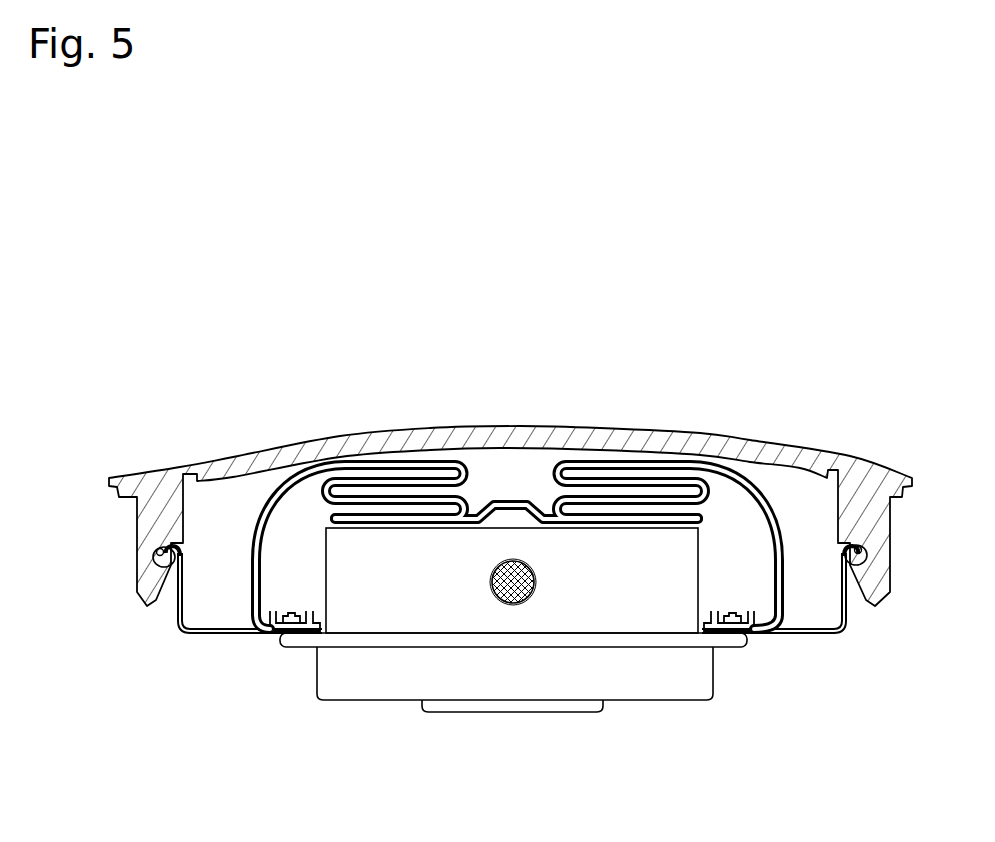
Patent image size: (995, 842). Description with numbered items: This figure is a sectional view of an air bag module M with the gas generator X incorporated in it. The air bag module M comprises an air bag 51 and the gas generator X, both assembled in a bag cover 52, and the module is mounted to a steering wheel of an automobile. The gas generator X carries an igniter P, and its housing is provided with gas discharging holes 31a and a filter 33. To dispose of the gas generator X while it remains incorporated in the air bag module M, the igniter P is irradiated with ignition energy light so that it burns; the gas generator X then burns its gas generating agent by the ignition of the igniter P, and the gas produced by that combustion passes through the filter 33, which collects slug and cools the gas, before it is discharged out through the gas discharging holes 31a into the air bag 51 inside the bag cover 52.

The air bag module M is at (502, 407).
The air bag 51 is at (738, 490).
The bag cover 52 is at (806, 452).
The gas generator X is at (371, 591).
The igniter P is at (512, 712).
The filter 33 is at (493, 613).
The gas discharging holes 31a is at (530, 590).